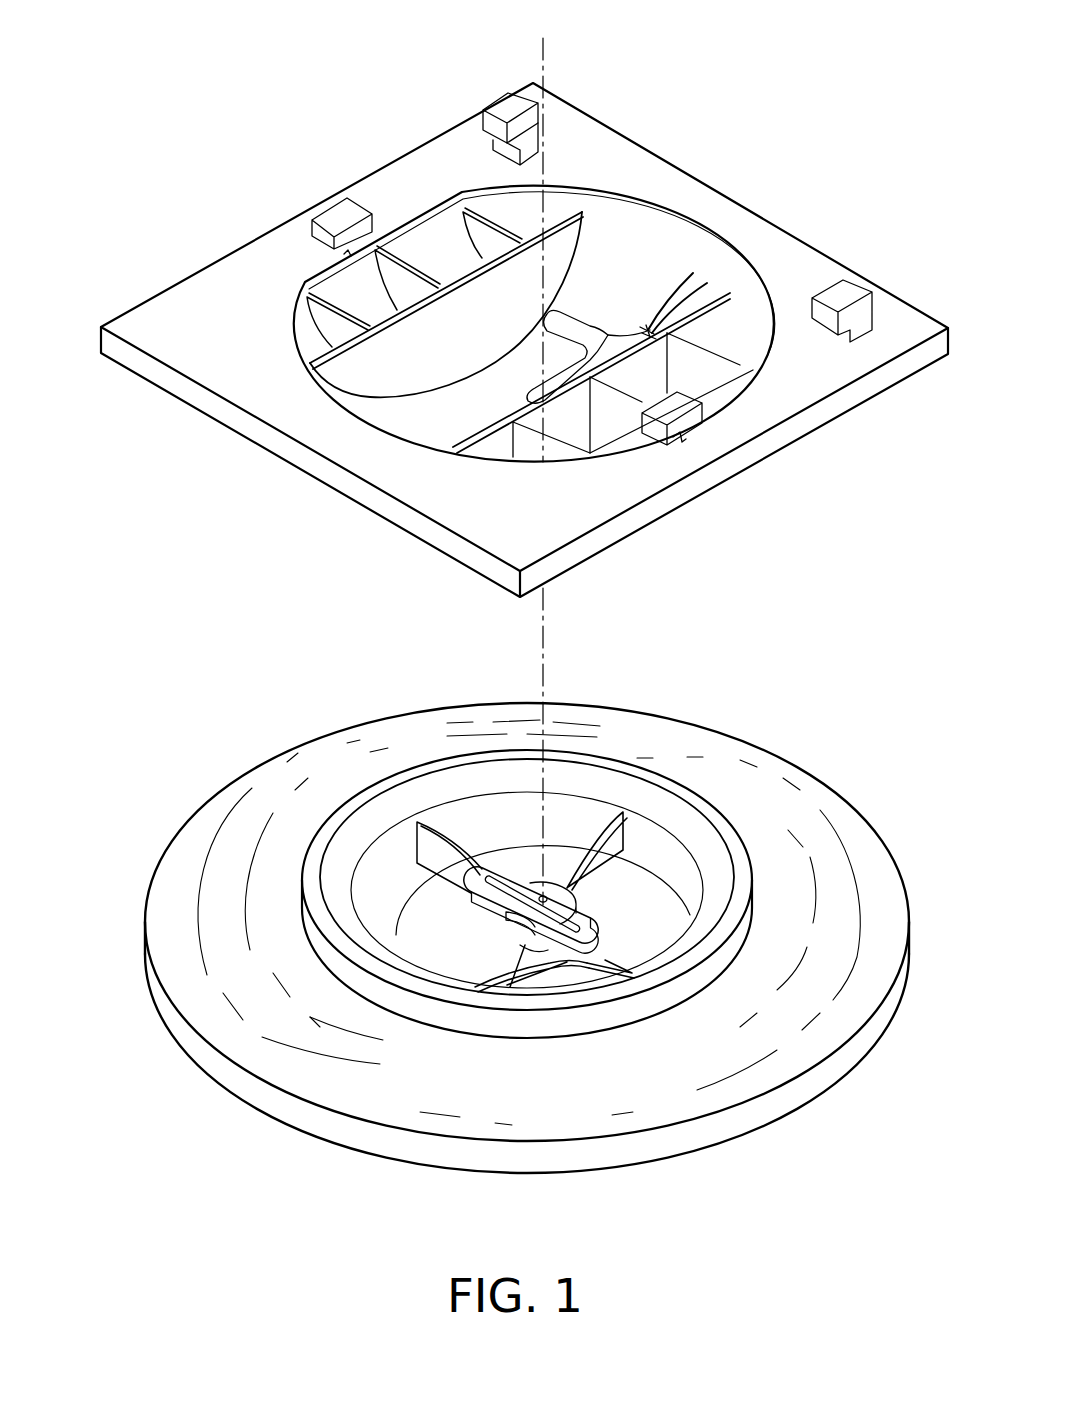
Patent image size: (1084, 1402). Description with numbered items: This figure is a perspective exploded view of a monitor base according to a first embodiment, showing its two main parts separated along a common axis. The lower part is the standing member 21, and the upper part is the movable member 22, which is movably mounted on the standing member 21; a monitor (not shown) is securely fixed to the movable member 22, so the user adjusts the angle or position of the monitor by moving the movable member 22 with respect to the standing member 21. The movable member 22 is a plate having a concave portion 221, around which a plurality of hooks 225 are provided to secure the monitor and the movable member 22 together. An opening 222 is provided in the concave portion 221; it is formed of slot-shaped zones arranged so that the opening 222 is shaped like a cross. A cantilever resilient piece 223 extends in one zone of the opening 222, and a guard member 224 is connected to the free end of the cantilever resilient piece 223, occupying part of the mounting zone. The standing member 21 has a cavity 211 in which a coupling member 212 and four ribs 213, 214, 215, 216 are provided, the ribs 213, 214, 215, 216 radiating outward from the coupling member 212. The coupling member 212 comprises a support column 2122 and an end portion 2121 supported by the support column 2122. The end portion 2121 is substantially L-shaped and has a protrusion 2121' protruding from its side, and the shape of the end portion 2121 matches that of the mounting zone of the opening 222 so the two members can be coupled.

The standing member 21 is at (193, 843).
The cavity 211 is at (403, 907).
The coupling member 212 is at (185, 1192).
The end portion 2121 is at (350, 988).
The protrusion 2121' is at (373, 1066).
The support column 2122 is at (500, 920).
The rib 213 is at (620, 837).
The rib 214 is at (423, 847).
The rib 215 is at (510, 987).
The rib 216 is at (612, 973).
The movable member 22 is at (233, 285).
The concave portion 221 is at (413, 415).
The opening 222 is at (567, 375).
The cantilever resilient piece 223 is at (700, 273).
The guard member 224 is at (652, 327).
The hook 225 is at (512, 102).